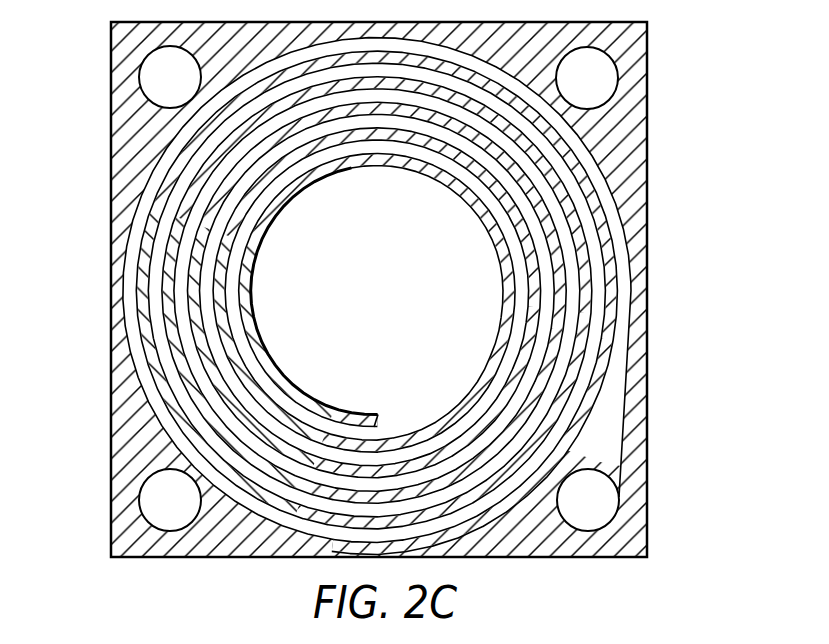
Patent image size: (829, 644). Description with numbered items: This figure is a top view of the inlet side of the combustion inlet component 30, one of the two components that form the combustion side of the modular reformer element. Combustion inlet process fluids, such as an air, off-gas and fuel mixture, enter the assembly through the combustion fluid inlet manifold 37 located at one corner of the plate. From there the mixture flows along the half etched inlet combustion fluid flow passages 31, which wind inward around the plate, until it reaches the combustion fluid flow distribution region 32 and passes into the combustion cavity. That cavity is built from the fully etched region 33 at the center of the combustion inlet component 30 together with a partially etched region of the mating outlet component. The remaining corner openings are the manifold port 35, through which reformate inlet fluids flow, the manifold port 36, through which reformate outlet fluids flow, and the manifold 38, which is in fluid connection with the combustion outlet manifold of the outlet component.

The combustion inlet component 30 is at (725, 96).
The half etched inlet combustion fluid flow passages 31 is at (595, 163).
The combustion fluid flow distribution region 32 is at (427, 417).
The fully etched region 33 is at (422, 300).
The manifold port 35 is at (604, 67).
The manifold port 36 is at (152, 503).
The combustion fluid inlet manifold 37 is at (605, 497).
The manifold 38 is at (152, 85).